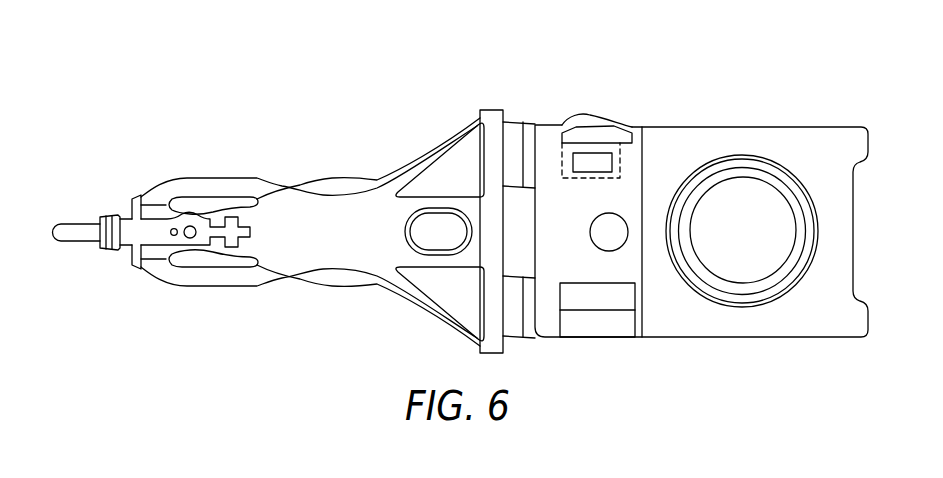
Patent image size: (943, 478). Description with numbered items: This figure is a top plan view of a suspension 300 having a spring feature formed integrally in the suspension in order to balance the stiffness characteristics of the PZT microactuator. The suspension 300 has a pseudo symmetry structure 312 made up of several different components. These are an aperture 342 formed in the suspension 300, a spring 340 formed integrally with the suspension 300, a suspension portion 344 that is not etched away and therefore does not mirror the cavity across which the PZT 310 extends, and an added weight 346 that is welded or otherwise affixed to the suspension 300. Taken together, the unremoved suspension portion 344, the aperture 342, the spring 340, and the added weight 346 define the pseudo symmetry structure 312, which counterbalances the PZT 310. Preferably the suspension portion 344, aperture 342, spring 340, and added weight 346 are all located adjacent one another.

The suspension 300 is at (405, 133).
The PZT 310 is at (592, 322).
The pseudo symmetry structure 312 is at (556, 85).
The spring 340 is at (595, 133).
The aperture 342 is at (607, 133).
The suspension portion 344 is at (621, 167).
The added weight 346 is at (575, 163).